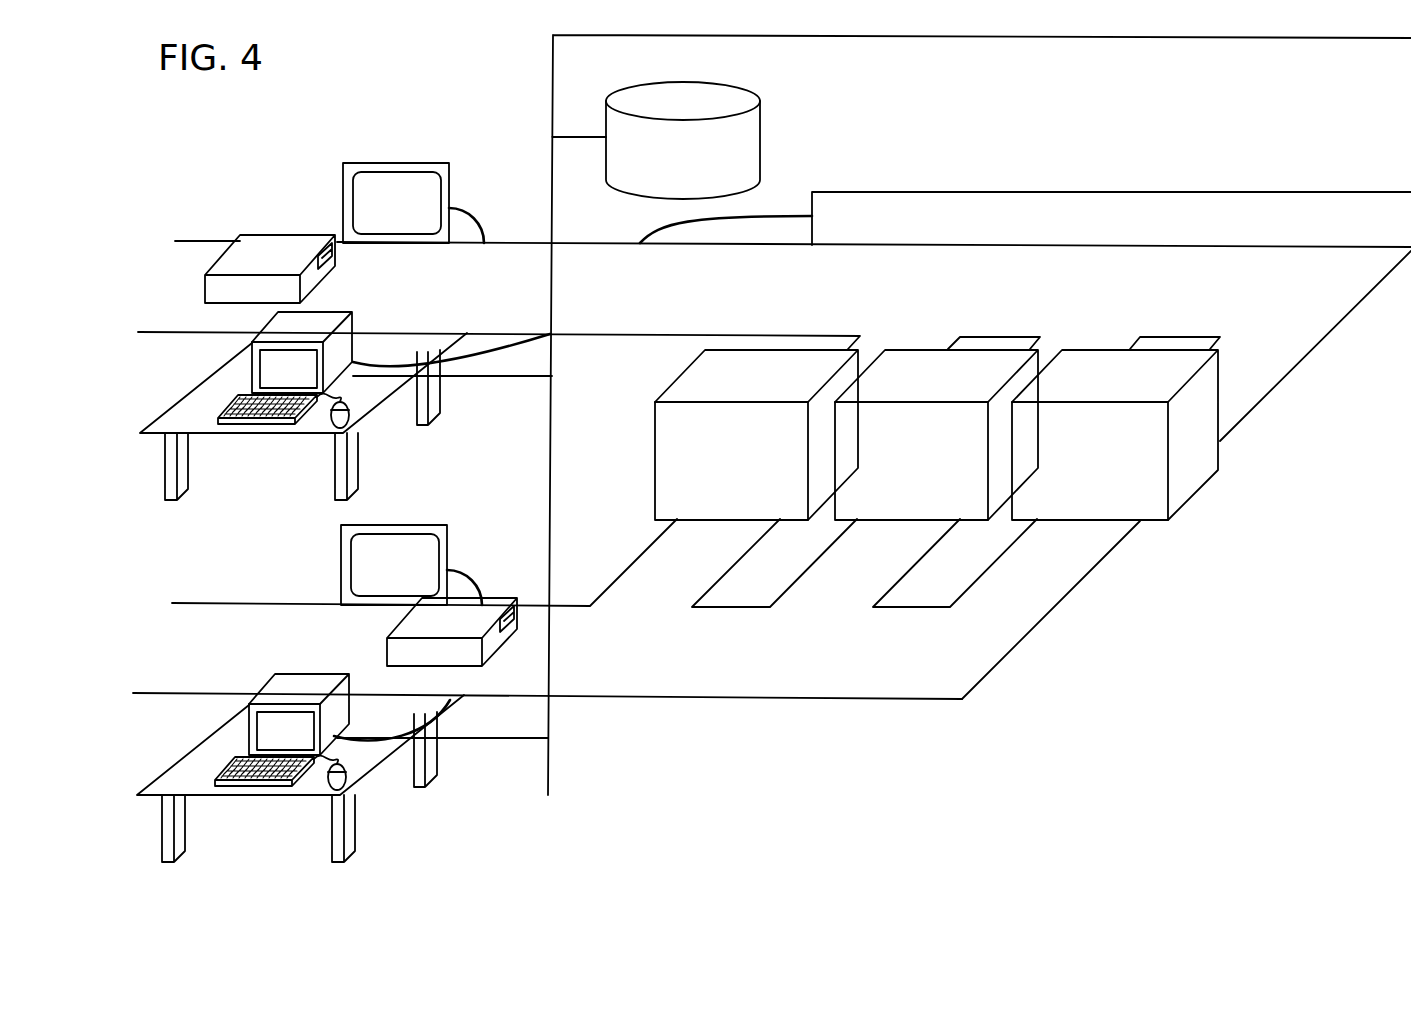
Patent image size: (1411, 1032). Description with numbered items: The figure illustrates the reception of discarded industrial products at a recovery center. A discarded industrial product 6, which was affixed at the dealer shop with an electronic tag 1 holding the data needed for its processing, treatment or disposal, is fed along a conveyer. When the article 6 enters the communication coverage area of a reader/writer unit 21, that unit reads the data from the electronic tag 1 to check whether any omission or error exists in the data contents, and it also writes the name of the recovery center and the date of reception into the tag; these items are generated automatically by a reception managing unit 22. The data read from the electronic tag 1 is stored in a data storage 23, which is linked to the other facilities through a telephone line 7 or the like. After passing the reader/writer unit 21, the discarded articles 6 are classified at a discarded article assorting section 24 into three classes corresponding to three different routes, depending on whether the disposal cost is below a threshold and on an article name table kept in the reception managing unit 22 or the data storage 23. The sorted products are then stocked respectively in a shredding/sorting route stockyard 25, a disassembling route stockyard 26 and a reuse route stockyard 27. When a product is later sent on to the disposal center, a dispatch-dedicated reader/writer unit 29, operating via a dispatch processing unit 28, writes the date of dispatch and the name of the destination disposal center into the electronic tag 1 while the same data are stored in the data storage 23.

The electronic tag 1 is at (337, 255).
The discarded industrial product 6 is at (288, 250).
The telephone line 7 is at (1253, 38).
The reader/writer unit 21 is at (398, 163).
The reception managing unit 22 is at (353, 328).
The data storage 23 is at (762, 138).
The discarded article assorting section 24 is at (1111, 192).
The shredding/sorting route stockyard 25 is at (687, 369).
The disassembling route stockyard 26 is at (913, 366).
The reuse route stockyard 27 is at (1102, 366).
The dispatch processing unit 28 is at (320, 684).
The dispatch-dedicated reader/writer unit 29 is at (341, 553).